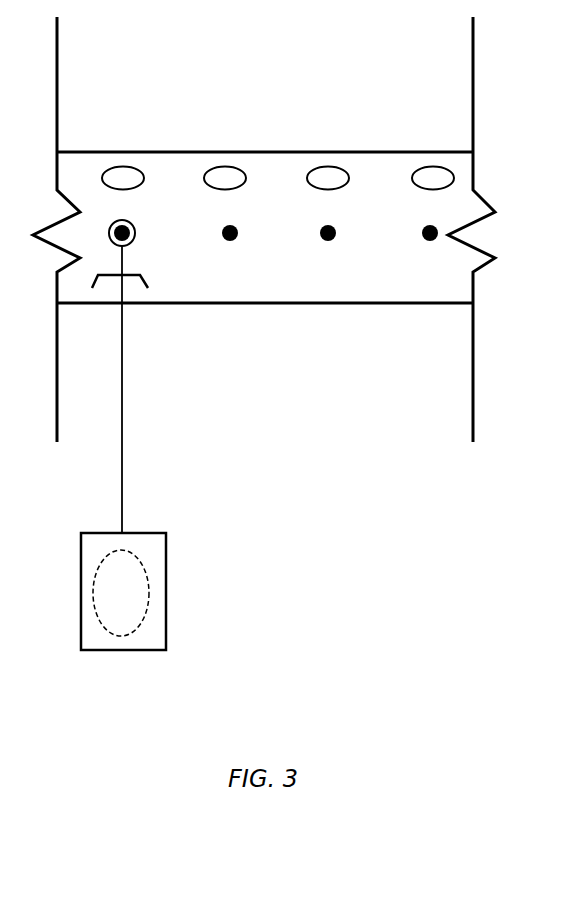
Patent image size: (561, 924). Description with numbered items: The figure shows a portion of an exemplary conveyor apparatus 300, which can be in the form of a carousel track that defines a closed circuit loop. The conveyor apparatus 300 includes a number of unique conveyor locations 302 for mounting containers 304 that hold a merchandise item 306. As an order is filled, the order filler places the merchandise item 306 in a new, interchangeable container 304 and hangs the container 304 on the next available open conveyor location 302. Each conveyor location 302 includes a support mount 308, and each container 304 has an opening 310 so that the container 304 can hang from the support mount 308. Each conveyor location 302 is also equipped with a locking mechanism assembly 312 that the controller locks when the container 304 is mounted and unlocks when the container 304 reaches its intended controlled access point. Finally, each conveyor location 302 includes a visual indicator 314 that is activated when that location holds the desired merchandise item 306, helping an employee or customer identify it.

The conveyor apparatus 300 is at (347, 288).
The conveyor location 302 is at (408, 232).
The container 304 is at (170, 547).
The merchandise item 306 is at (150, 607).
The support mount 308 is at (238, 225).
The opening 310 is at (137, 225).
The locking mechanism assembly 312 is at (147, 293).
The visual indicator 314 is at (124, 165).